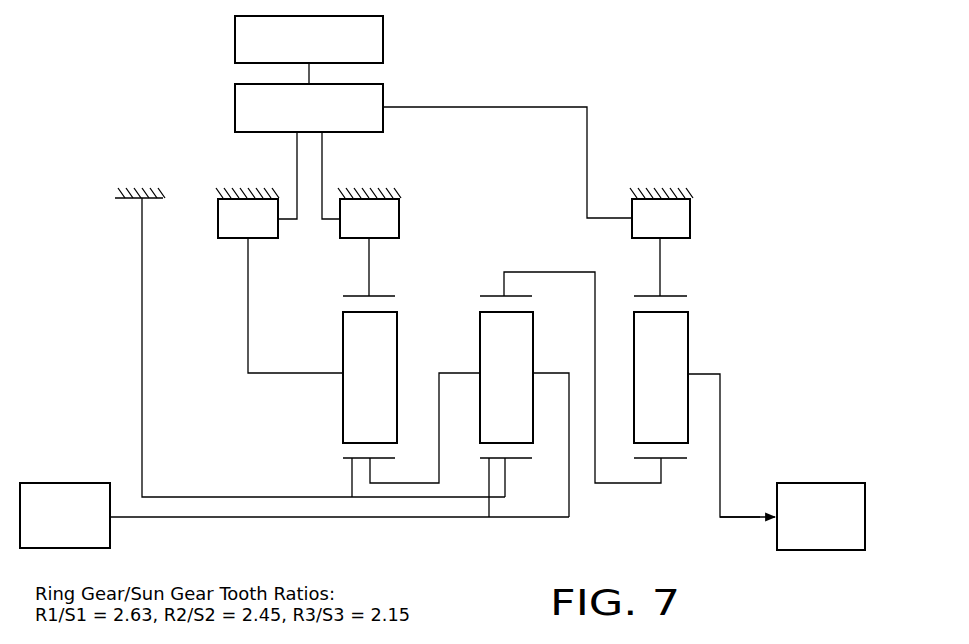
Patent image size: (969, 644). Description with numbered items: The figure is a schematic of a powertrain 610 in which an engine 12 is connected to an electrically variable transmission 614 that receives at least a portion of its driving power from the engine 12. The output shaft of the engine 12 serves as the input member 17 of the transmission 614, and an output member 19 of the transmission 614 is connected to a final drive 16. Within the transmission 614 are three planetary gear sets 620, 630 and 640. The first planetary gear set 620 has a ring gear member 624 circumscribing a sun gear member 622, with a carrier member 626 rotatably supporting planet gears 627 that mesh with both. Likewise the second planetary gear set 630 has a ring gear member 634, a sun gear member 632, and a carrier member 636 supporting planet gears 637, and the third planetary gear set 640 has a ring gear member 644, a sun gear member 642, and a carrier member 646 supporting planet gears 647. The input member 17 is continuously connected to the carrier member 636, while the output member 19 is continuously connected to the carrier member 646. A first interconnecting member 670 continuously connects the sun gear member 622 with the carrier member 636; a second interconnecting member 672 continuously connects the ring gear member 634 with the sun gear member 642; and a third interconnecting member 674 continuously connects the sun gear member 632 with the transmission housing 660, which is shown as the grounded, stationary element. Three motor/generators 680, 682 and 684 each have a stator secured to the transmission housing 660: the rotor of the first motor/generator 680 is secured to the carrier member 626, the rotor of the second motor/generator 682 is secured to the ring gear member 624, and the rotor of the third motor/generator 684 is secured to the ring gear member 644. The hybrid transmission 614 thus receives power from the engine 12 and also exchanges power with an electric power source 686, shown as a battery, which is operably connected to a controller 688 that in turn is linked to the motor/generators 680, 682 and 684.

The engine 12 is at (78, 470).
The final drive 16 is at (795, 480).
The input member 17 is at (133, 520).
The output member 19 is at (752, 520).
The powertrain 610 is at (762, 112).
The electrically variable transmission 614 is at (802, 152).
The first planetary gear set 620 is at (342, 395).
The sun gear member 622 is at (352, 460).
The ring gear member 624 is at (395, 296).
The carrier member 626 is at (338, 378).
The planet gears 627 is at (370, 377).
The second planetary gear set 630 is at (499, 389).
The sun gear member 632 is at (490, 460).
The ring gear member 634 is at (490, 296).
The carrier member 636 is at (472, 365).
The planet gears 637 is at (506, 377).
The third planetary gear set 640 is at (692, 395).
The sun gear member 642 is at (645, 460).
The ring gear member 644 is at (680, 296).
The carrier member 646 is at (699, 370).
The planet gears 647 is at (661, 377).
The transmission housing 660 is at (138, 187).
The first interconnecting member 670 is at (422, 485).
The second interconnecting member 672 is at (522, 272).
The third interconnecting member 674 is at (205, 500).
The first motor/generator 680 is at (208, 205).
The second motor/generator 682 is at (407, 206).
The third motor/generator 684 is at (698, 206).
The electric power source 686 is at (235, 40).
The controller 688 is at (235, 107).